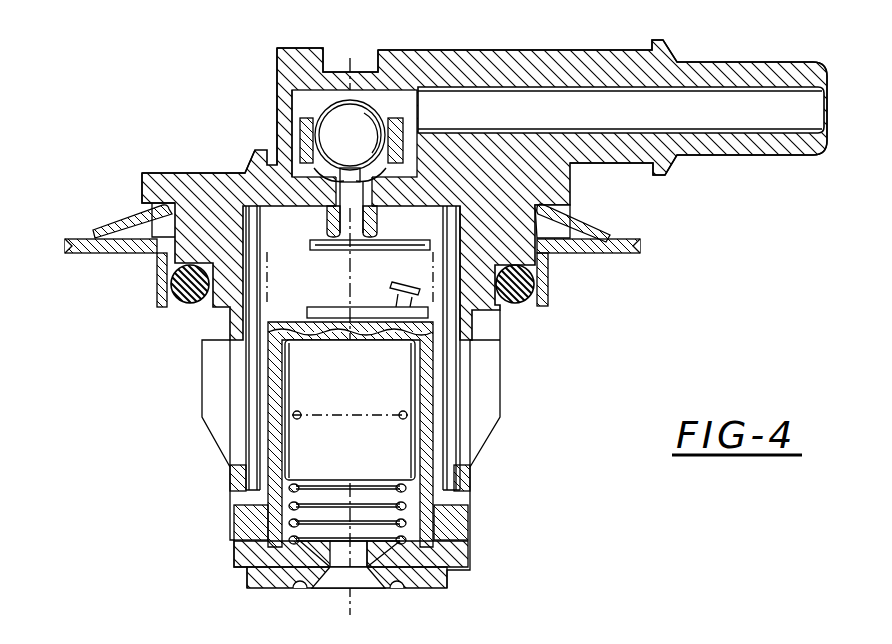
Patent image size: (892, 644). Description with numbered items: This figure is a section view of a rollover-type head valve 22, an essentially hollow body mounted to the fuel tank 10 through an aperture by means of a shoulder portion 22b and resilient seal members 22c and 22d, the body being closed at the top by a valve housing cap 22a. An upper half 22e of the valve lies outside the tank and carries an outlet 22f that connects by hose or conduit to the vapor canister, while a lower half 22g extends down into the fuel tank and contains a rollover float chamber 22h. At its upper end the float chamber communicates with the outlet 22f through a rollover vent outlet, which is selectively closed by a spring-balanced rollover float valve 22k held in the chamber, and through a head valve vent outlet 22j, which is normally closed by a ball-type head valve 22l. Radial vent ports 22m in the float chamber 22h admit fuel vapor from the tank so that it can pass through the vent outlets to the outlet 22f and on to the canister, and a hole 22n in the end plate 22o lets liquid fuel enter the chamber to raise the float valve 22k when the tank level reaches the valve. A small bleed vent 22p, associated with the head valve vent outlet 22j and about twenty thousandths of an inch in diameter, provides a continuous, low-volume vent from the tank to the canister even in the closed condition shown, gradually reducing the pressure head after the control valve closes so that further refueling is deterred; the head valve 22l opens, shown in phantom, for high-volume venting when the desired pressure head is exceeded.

The fuel tank 10 is at (598, 255).
The rollover head valve 22 is at (178, 308).
The valve housing cap 22a is at (306, 147).
The shoulder portion 22b is at (153, 256).
The resilient seal member 22c is at (607, 238).
The resilient seal member 22d is at (507, 304).
The upper half 22e is at (181, 172).
The outlet 22f is at (741, 121).
The lower half 22g is at (450, 505).
The rollover float chamber 22h is at (265, 478).
The head valve vent outlet 22j is at (414, 176).
The rollover float valve 22k is at (432, 413).
The ball-type head valve 22l is at (335, 118).
The radial vent ports 22m is at (236, 418).
The hole 22n is at (330, 553).
The end plate 22o is at (427, 565).
The bleed vent 22p is at (285, 146).